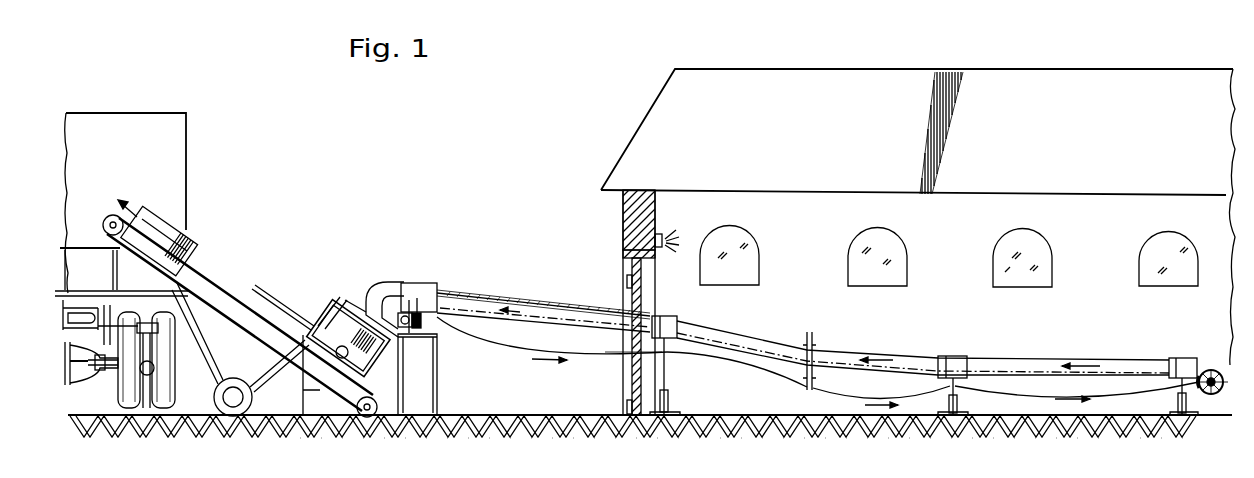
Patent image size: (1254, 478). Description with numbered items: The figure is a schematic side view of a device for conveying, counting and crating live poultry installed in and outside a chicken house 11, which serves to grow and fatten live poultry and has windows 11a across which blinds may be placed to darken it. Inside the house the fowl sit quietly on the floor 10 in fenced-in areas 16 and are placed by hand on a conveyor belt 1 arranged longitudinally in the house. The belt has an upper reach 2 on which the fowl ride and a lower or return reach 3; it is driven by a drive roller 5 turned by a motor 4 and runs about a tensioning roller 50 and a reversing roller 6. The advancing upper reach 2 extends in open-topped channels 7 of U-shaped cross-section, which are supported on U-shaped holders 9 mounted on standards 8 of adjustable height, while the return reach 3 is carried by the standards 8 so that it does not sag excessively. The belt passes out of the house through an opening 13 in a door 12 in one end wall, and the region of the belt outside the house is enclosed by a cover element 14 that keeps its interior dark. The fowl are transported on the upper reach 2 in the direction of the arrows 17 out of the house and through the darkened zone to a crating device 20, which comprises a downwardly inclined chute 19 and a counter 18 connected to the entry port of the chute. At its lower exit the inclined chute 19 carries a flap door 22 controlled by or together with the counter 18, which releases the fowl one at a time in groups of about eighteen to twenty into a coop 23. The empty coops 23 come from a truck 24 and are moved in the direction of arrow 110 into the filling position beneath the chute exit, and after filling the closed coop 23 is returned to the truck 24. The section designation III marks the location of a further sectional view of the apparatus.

The conveyor belt 1 is at (915, 352).
The upper reach 2 is at (805, 342).
The return reach 3 is at (758, 372).
The motor 4 is at (402, 312).
The drive roller 5 is at (418, 312).
The reversing roller 6 is at (1214, 396).
The open-topped channels 7 is at (582, 318).
The standards 8 is at (669, 396).
The U-shaped holders 9 is at (670, 318).
The floor 10 is at (512, 413).
The chicken house 11 is at (958, 241).
The windows 11a is at (1045, 268).
The door 12 is at (634, 394).
The opening 13 is at (632, 357).
The cover element 14 is at (549, 306).
The fenced-in areas 16 is at (795, 413).
The arrows 17 is at (527, 313).
The counter 18 is at (425, 283).
The inclined chute 19 is at (363, 317).
The crating device 20 is at (374, 283).
The flap door 22 is at (336, 305).
The coop 23 is at (195, 245).
The truck 24 is at (148, 158).
The tensioning roller 50 is at (418, 340).
The arrow 110 is at (300, 362).
The section line III is at (1217, 367).